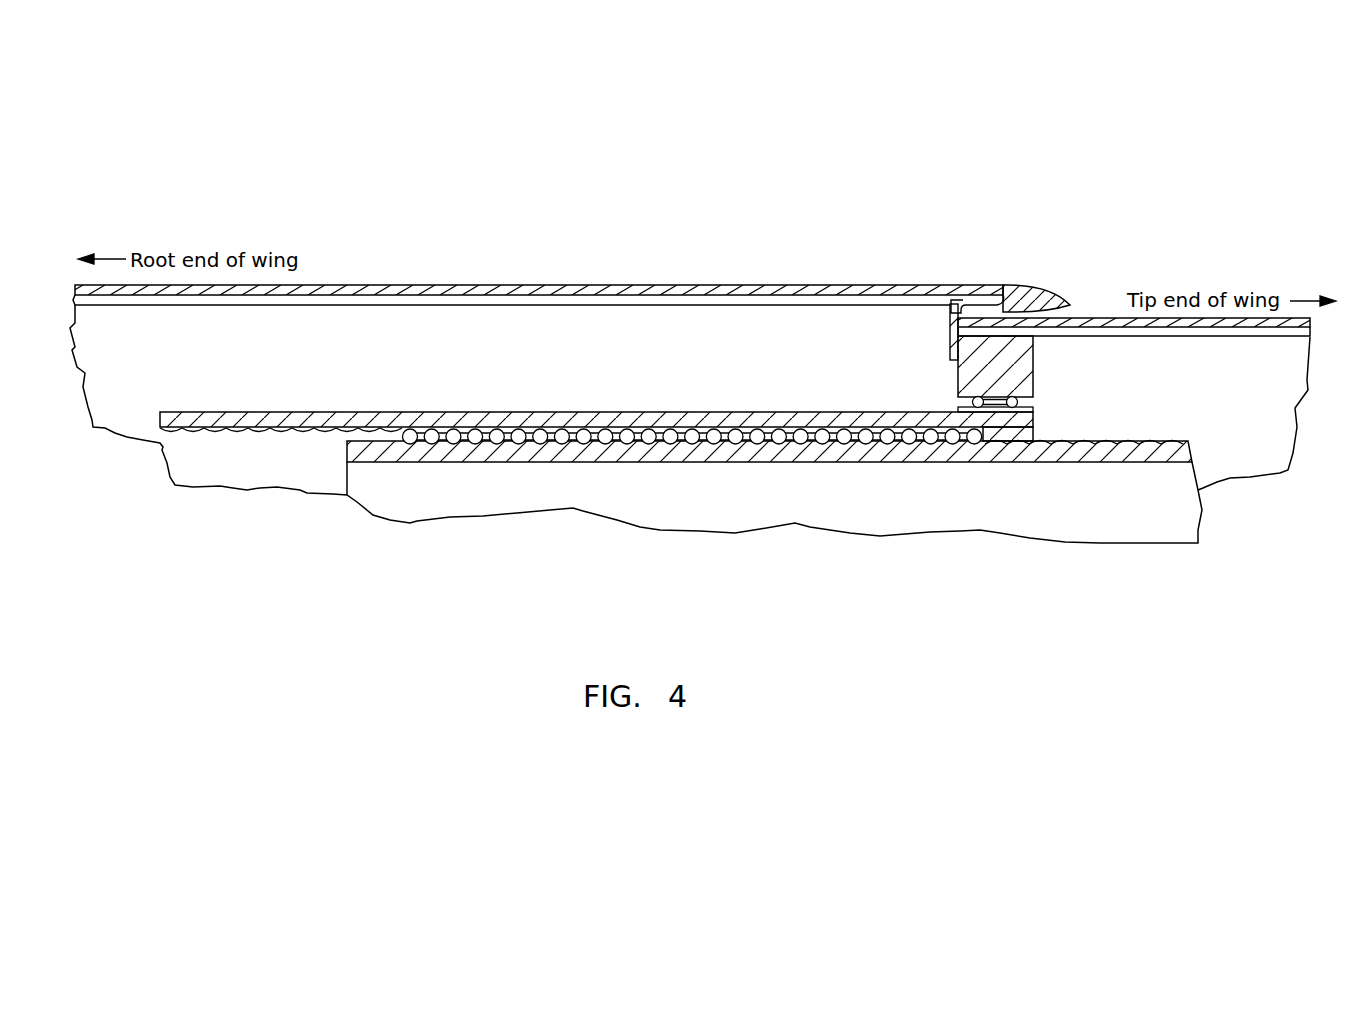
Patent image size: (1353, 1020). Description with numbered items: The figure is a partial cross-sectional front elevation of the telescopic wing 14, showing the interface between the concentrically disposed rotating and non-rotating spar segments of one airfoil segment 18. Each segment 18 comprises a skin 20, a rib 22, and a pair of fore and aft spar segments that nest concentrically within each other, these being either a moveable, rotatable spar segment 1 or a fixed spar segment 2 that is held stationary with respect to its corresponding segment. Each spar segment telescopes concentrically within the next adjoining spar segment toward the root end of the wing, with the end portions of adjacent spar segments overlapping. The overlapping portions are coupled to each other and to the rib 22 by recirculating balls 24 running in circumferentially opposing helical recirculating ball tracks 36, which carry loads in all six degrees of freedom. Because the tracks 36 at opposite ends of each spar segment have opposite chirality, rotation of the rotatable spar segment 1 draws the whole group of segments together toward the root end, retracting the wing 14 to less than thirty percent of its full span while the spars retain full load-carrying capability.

The telescopic wing 14 is at (784, 119).
The airfoil segment 18 is at (540, 269).
The skin 20 is at (910, 290).
The rib 22 is at (1033, 365).
The recirculating balls 24 is at (586, 441).
The helical recirculating ball tracks 36 is at (307, 431).
The rotatable spar segment 1 is at (205, 431).
The fixed spar segment 2 is at (1112, 453).